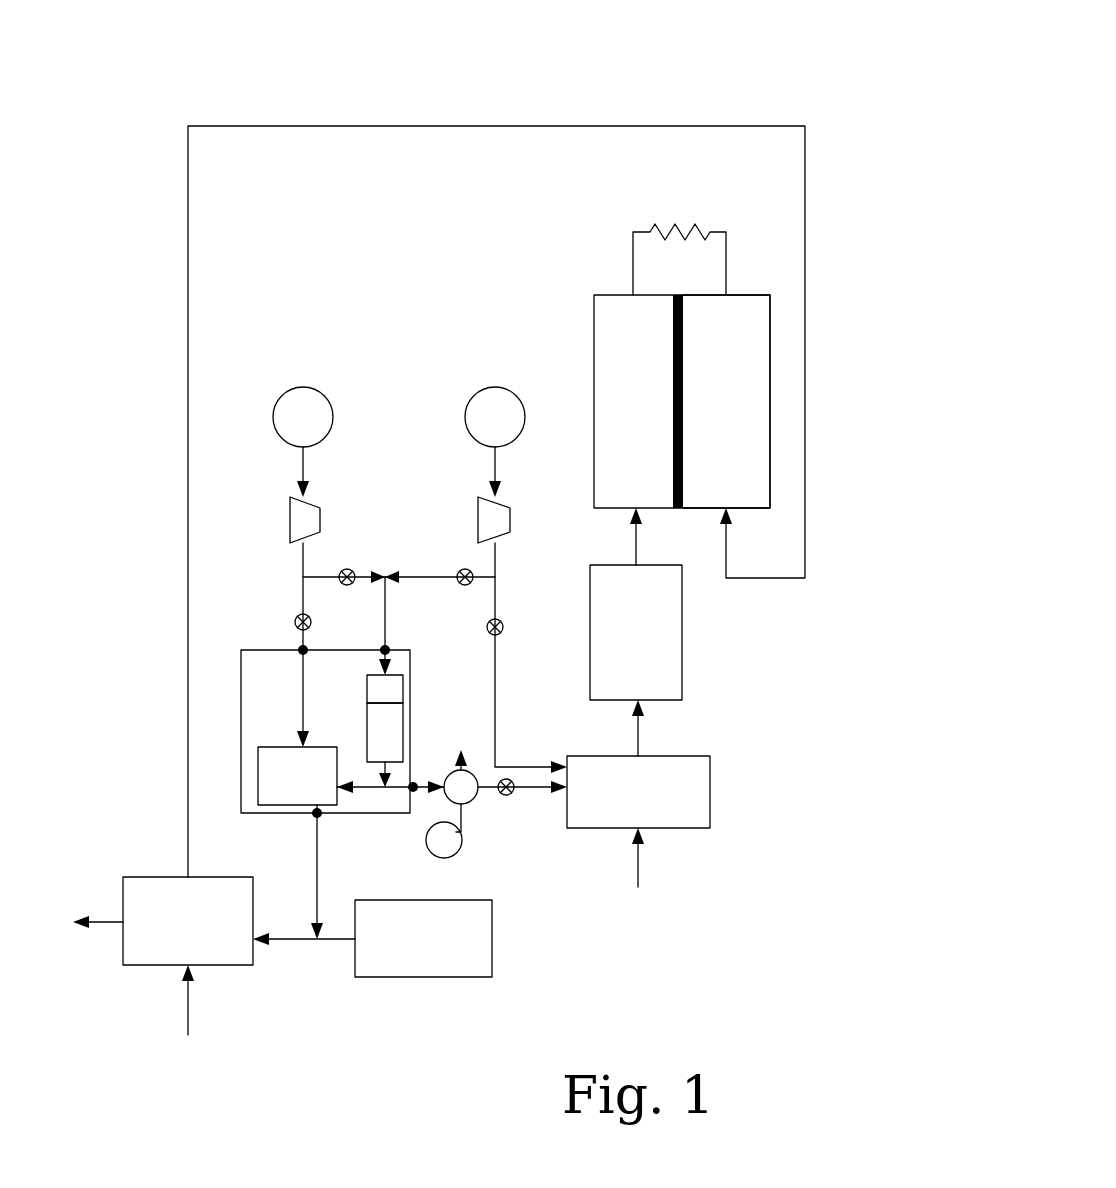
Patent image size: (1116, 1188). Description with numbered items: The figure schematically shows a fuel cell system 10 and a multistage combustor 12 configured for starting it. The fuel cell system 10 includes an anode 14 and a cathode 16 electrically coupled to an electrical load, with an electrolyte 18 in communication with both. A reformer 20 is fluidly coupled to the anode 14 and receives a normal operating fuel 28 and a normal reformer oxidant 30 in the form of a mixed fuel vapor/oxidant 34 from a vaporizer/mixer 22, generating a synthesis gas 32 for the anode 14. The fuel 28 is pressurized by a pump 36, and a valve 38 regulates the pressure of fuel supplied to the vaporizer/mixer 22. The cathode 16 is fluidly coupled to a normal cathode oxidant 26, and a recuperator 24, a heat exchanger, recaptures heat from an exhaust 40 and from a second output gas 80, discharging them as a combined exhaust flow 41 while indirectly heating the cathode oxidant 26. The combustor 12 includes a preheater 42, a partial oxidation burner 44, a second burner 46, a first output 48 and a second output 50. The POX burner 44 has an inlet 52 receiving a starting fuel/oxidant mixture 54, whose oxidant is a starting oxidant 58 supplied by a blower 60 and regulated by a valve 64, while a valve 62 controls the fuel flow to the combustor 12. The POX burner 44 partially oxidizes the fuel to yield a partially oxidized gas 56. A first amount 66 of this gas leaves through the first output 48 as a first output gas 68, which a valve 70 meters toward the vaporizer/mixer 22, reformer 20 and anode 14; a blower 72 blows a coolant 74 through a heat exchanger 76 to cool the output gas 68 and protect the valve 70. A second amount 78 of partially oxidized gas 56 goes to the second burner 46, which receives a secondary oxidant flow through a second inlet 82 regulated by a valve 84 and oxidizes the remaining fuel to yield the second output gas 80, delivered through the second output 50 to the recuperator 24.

The fuel cell system 10 is at (683, 72).
The multistage combustor 12 is at (241, 715).
The anode 14 is at (682, 352).
The cathode 16 is at (726, 401).
The electrolyte 18 is at (678, 510).
The reformer 20 is at (636, 632).
The vaporizer/mixer 22 is at (638, 792).
The recuperator 24 is at (188, 921).
The normal cathode oxidant 26 is at (805, 578).
The normal operating fuel 28 is at (495, 442).
The normal reformer oxidant 30 is at (638, 870).
The synthesis gas 32 is at (636, 545).
The mixed fuel vapor/oxidant 34 is at (638, 735).
The pump 36 is at (510, 520).
The valve 38 is at (495, 627).
The exhaust 40 is at (372, 938).
The combined exhaust flow 41 is at (105, 921).
The preheater 42 is at (385, 689).
The partial oxidation (POX) burner 44 is at (385, 732).
The second burner 46 is at (297, 776).
The first output 48 is at (413, 785).
The second output 50 is at (318, 815).
The inlet 52 is at (387, 646).
The starting fuel/oxidant mixture 54 is at (385, 605).
The partially oxidized gas 56 is at (372, 765).
The starting oxidant 58 is at (303, 442).
The blower 60 is at (320, 520).
The valve 62 is at (465, 570).
The valve 64 is at (347, 570).
The first amount 66 is at (412, 792).
The first output gas 68 is at (420, 787).
The valve 70 is at (506, 795).
The blower 72 is at (444, 858).
The coolant 74 is at (470, 768).
The heat exchanger 76 is at (470, 808).
The second amount 78 is at (372, 790).
The second output gas 80 is at (317, 876).
The second inlet 82 is at (305, 645).
The valve 84 is at (303, 622).